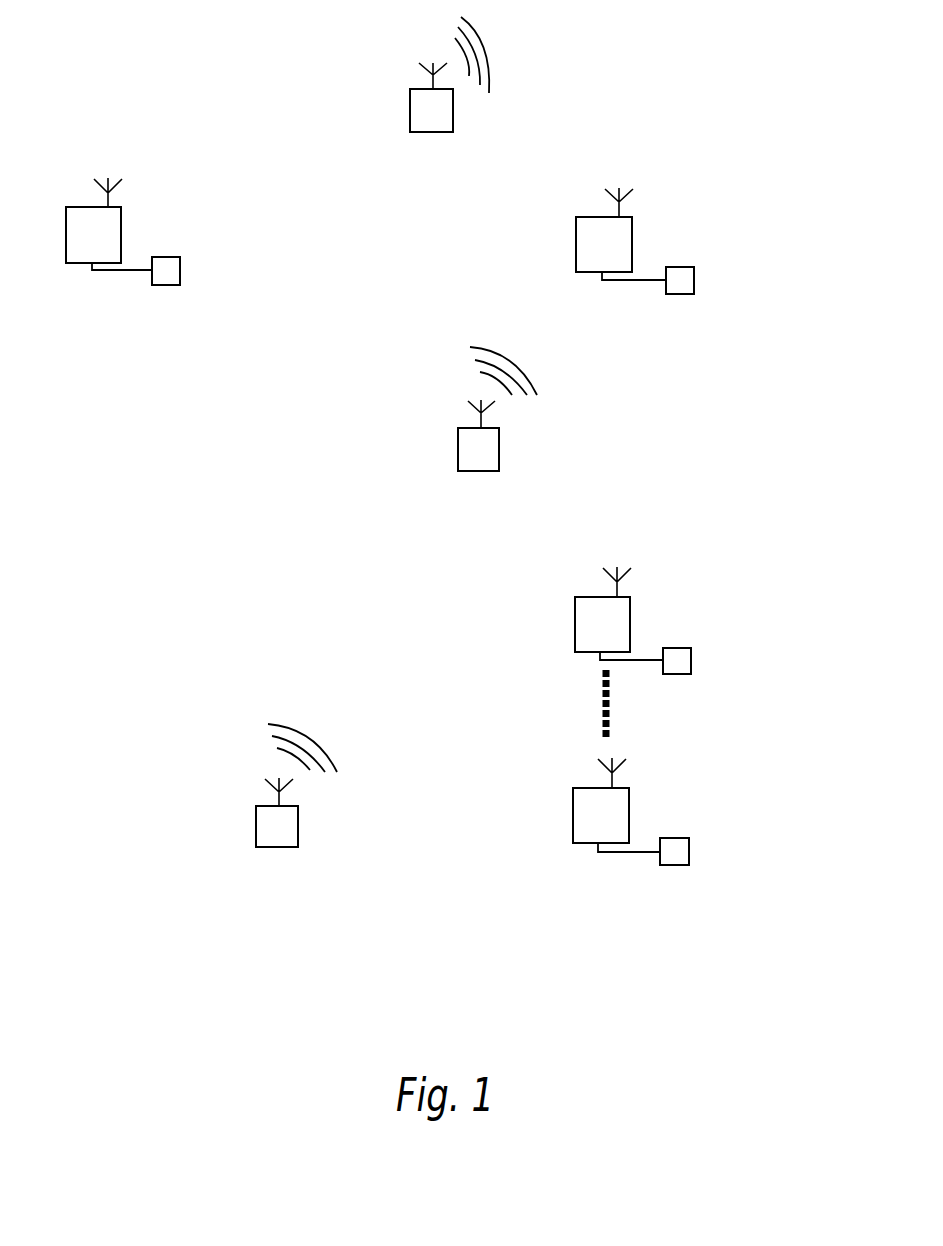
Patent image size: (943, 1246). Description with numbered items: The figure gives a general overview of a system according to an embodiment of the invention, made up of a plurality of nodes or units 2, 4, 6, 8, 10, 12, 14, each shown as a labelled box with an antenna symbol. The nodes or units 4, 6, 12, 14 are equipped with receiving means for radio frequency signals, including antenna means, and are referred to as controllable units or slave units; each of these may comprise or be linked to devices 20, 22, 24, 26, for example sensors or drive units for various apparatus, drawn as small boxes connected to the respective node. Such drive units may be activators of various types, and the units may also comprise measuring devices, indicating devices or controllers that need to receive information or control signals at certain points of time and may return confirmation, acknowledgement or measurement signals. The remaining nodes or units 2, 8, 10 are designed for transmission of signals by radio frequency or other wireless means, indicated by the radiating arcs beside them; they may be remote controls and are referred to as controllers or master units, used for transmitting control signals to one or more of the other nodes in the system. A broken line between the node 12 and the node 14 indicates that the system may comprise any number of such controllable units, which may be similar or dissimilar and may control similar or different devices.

The node or unit N1 2 is at (410, 103).
The node or unit N2 4 is at (632, 240).
The node or unit N3 6 is at (121, 231).
The node or unit N4 8 is at (458, 448).
The node or unit N5 10 is at (256, 822).
The node or unit N6 12 is at (630, 623).
The node or unit Nn 14 is at (629, 814).
The device 20 is at (694, 276).
The device 22 is at (180, 266).
The device 24 is at (691, 657).
The device 26 is at (689, 847).